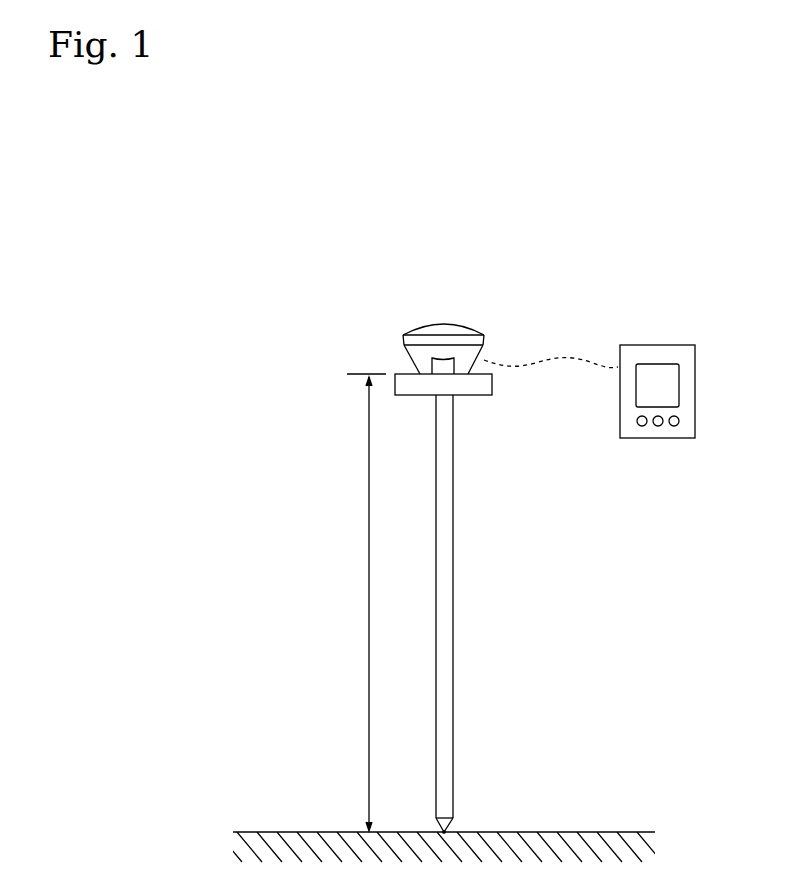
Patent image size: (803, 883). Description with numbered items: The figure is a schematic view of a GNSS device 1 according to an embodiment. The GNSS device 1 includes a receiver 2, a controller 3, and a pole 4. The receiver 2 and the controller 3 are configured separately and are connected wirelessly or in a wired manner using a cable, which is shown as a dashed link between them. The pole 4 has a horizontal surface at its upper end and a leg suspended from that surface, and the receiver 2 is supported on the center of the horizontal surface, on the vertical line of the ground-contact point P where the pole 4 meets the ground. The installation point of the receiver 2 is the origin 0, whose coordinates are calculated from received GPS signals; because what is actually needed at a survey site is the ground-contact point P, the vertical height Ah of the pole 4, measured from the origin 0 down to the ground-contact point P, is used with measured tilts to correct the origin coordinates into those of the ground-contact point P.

The GNSS device 1 is at (591, 243).
The receiver 2 is at (420, 372).
The controller 3 is at (628, 345).
The pole 4 is at (448, 630).
The origin 0 is at (418, 372).
The vertical height of the pole Ah is at (351, 604).
The ground-contact point P is at (450, 830).